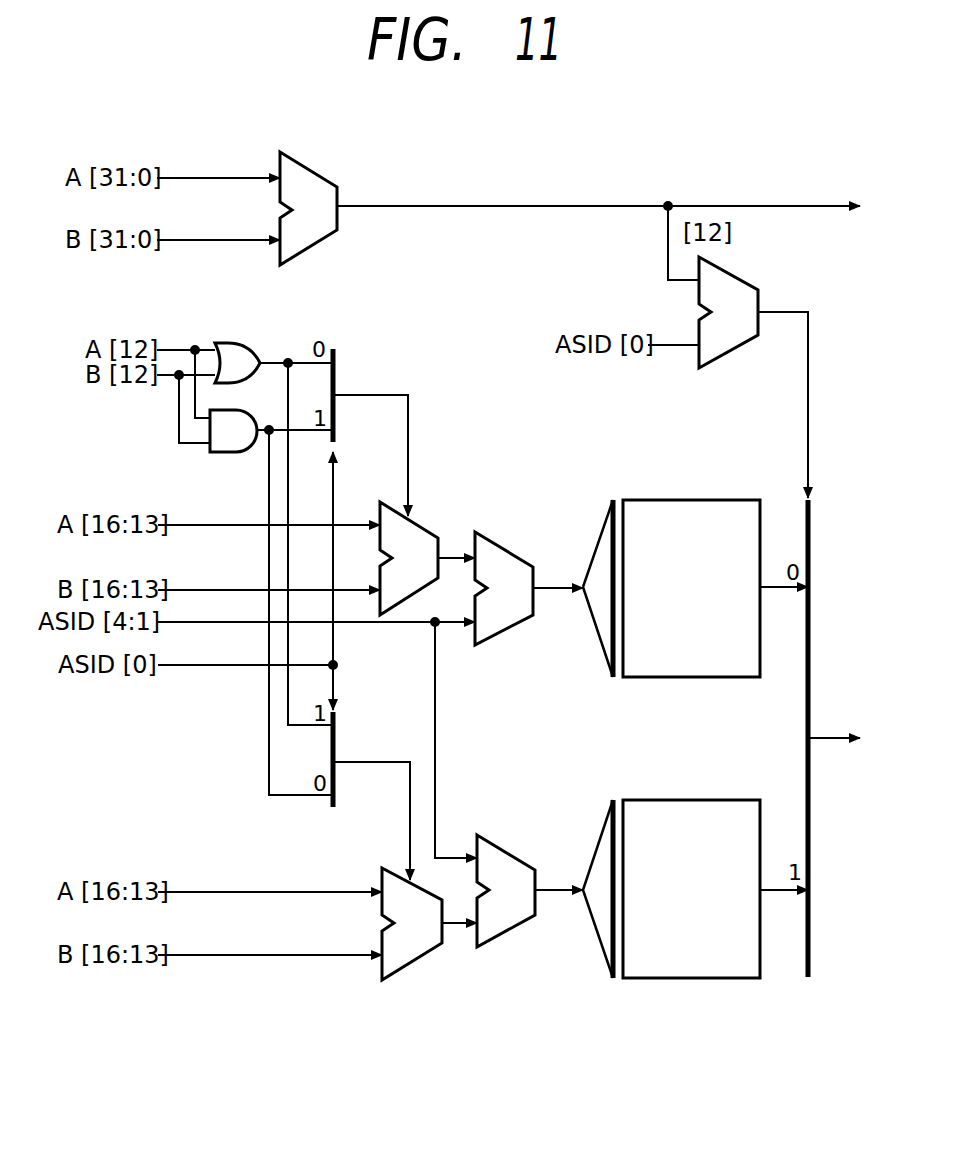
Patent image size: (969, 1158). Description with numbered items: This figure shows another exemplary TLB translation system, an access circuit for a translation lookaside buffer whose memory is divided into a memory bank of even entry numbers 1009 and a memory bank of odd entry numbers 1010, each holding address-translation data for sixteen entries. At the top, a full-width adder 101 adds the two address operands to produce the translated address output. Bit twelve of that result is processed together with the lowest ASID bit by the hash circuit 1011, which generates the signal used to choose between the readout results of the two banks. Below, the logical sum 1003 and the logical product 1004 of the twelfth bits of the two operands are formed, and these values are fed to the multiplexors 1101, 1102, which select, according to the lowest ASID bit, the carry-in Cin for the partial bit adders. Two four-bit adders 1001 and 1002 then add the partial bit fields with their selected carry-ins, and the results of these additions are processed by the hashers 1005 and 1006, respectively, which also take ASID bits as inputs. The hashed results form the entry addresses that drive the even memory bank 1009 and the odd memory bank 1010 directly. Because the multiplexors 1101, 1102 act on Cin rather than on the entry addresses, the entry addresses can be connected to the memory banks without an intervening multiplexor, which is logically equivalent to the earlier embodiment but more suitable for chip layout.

The adder / virtual address bus 101 is at (320, 173).
The four-bit adder 1001 is at (416, 522).
The four-bit adder 1002 is at (410, 962).
The logical sum 1003 is at (216, 341).
The logical product 1004 is at (231, 454).
The hasher 1005 is at (500, 544).
The hasher 1006 is at (510, 846).
The memory bank of even entry numbers 1009 is at (700, 500).
The memory bank of odd entry numbers 1010 is at (700, 800).
The hash circuit 1011 is at (735, 270).
The multiplexor of Cin 1101 is at (338, 372).
The multiplexor of Cin 1102 is at (338, 742).